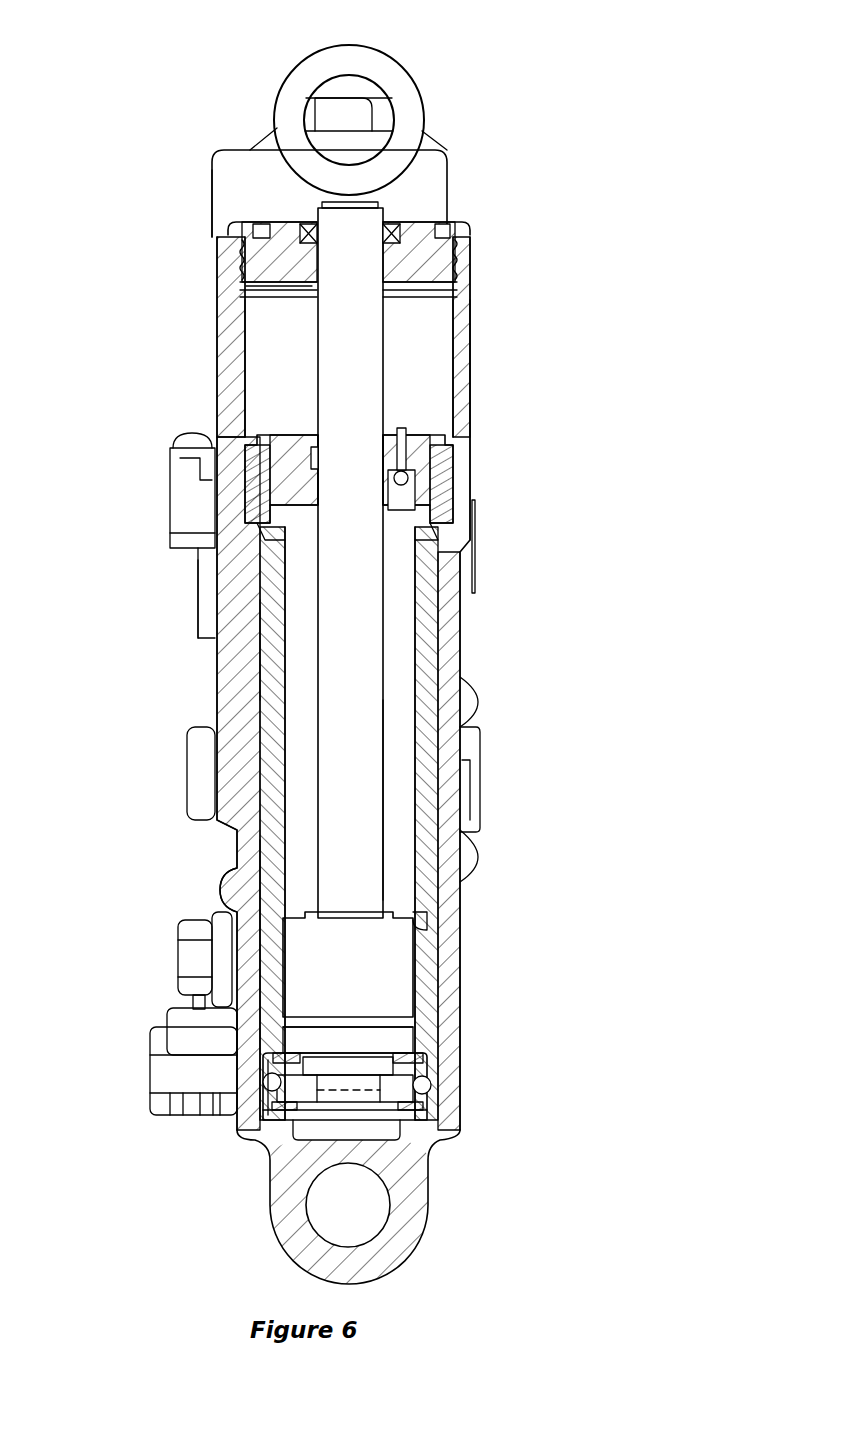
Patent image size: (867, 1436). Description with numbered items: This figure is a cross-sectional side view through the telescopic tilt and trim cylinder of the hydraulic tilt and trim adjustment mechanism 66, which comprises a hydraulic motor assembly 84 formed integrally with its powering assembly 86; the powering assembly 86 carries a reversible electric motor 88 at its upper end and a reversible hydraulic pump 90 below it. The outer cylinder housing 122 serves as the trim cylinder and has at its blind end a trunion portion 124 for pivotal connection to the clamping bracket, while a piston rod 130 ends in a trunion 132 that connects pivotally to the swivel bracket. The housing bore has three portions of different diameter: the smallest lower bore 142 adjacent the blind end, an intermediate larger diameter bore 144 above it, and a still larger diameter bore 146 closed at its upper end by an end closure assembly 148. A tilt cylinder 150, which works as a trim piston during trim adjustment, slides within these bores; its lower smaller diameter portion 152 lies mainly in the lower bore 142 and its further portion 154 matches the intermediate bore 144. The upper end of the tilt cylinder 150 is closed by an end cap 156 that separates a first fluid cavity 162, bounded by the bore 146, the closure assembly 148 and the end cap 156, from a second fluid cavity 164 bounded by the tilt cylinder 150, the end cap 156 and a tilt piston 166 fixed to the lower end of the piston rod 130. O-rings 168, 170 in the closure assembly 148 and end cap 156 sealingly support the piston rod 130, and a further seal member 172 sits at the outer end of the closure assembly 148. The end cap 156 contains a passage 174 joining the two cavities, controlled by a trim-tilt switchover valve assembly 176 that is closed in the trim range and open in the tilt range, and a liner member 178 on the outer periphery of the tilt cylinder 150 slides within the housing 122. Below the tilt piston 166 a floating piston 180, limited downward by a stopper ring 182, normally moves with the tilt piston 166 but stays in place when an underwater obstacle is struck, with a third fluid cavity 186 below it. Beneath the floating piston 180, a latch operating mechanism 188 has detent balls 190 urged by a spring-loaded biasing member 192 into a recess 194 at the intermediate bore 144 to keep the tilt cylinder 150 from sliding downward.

The hydraulic tilt and trim adjustment mechanism 66 is at (150, 85).
The hydraulic motor assembly 84 is at (488, 236).
The powering assembly 86 is at (232, 138).
The reversible electric motor 88 is at (212, 186).
The reversible hydraulic pump 90 is at (205, 622).
The outer cylinder housing 122 is at (478, 390).
The trunion portion 124 is at (400, 1250).
The piston rod 130 is at (316, 660).
The trunion 132 is at (405, 75).
The lower bore 142 is at (278, 1030).
The intermediate larger diameter bore 144 is at (260, 810).
The still larger diameter bore 146 is at (253, 381).
The end closure assembly 148 is at (262, 262).
The tilt cylinder 150 is at (425, 655).
The lower smaller diameter portion 152 is at (250, 960).
The further portion 154 is at (275, 640).
The end cap 156 is at (255, 460).
The first fluid cavity 162 is at (430, 340).
The second fluid cavity 164 is at (400, 812).
The tilt piston 166 is at (400, 975).
The O-ring 168 is at (310, 292).
The O-ring 170 is at (320, 486).
The seal member 172 is at (392, 222).
The passage 174 is at (445, 520).
The trim-tilt switchover valve assembly 176 is at (418, 428).
The liner member 178 is at (447, 460).
The floating piston 180 is at (400, 1045).
The stopper ring 182 is at (270, 1050).
The third fluid cavity 186 is at (375, 1130).
The latch operating mechanism 188 is at (428, 1106).
The detent balls 190 is at (264, 1082).
The biasing member 192 is at (280, 1110).
The recess 194 is at (430, 937).